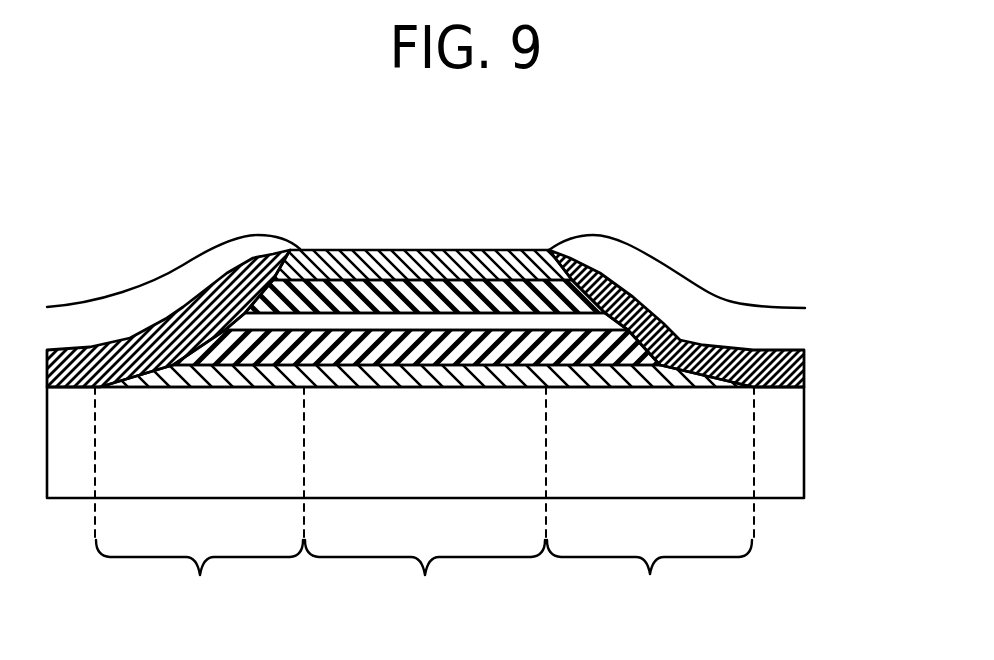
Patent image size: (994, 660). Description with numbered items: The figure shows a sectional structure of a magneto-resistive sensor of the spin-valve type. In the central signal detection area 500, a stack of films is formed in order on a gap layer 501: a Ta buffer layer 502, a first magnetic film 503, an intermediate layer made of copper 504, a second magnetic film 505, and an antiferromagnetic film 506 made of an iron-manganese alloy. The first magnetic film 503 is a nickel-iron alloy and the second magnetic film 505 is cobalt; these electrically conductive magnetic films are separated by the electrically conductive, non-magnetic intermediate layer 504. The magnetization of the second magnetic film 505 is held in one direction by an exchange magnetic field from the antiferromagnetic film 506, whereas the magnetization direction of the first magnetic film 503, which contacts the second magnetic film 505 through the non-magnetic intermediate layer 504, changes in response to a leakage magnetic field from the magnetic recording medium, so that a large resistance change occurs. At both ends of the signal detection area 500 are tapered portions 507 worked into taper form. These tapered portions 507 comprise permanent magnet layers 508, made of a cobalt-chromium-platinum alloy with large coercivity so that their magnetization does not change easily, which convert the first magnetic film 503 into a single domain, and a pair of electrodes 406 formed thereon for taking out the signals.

The electrodes 406 is at (193, 278).
The signal detection area 500 is at (425, 578).
The gap layer 501 is at (777, 443).
The Ta buffer layer 502 is at (472, 382).
The first magnetic film 503 is at (480, 343).
The intermediate layer 504 is at (402, 325).
The second magnetic film 505 is at (382, 295).
The antiferromagnetic film 506 is at (328, 258).
The tapered portions 507 is at (424, 502).
The permanent magnet layers 508 is at (145, 340).